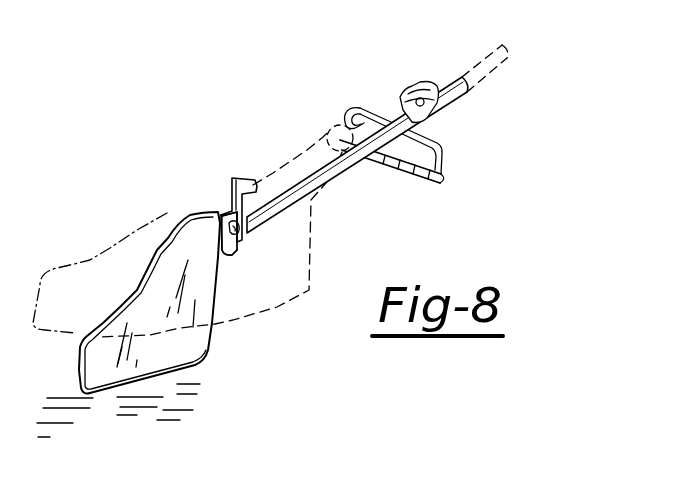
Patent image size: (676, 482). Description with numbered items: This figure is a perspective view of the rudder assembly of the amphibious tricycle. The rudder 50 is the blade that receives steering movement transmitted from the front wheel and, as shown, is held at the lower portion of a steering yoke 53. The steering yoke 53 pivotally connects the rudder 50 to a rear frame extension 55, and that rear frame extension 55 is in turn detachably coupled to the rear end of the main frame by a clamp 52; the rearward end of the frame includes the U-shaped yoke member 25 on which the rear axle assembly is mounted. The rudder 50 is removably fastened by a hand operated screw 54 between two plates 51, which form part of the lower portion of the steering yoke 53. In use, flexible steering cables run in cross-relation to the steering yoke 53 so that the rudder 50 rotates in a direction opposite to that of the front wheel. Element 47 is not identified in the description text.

The tube 47 is at (503, 44).
The clamp 52 is at (414, 88).
The U-shaped yoke member 25 is at (442, 142).
The rear frame extension 55 is at (317, 195).
The steering yoke 53 is at (240, 178).
The hand operated screw 54 is at (234, 250).
The plates 51 is at (227, 257).
The rudder 50 is at (190, 357).